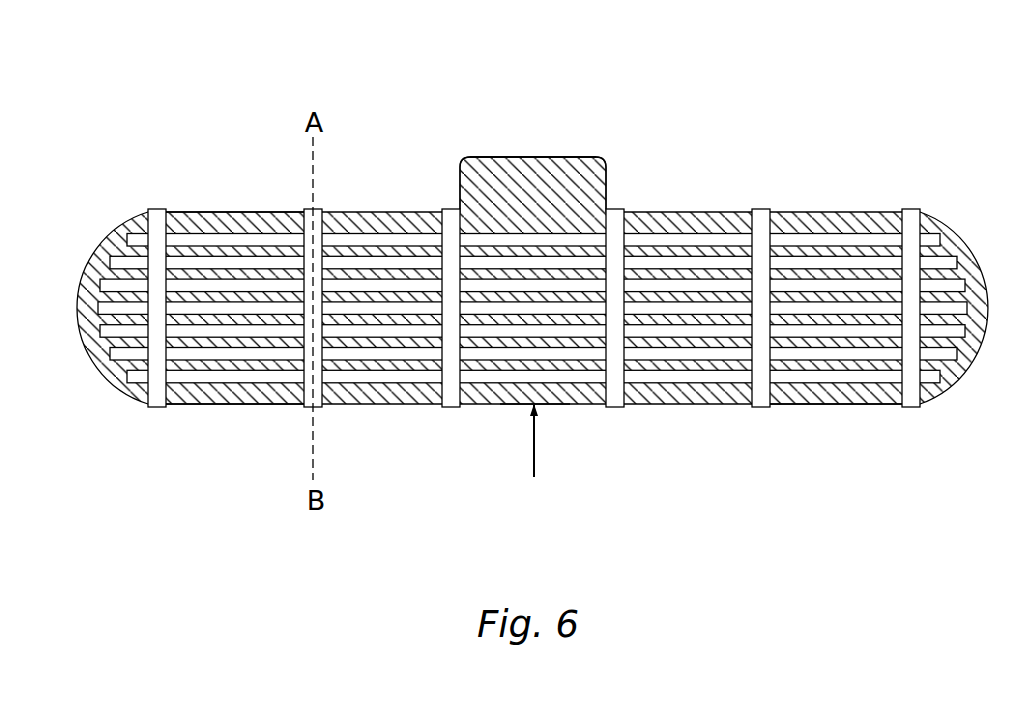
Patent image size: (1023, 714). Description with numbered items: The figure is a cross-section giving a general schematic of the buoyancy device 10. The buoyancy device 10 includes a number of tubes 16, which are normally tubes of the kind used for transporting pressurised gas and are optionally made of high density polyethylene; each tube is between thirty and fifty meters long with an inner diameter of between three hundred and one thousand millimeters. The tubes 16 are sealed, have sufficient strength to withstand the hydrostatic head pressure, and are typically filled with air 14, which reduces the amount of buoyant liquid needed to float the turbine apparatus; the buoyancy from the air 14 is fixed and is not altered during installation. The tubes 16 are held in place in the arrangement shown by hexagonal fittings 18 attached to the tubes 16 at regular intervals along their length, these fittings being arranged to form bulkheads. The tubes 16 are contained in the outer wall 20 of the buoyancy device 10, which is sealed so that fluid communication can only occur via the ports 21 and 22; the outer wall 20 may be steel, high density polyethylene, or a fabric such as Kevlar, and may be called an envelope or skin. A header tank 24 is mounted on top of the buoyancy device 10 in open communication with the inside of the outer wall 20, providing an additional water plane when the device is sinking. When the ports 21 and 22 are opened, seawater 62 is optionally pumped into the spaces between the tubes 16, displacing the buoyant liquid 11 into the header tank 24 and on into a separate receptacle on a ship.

The buoyancy device 10 is at (835, 140).
The buoyant liquid 11 is at (534, 157).
The air 14 is at (855, 235).
The tubes 16 is at (219, 231).
The hexagonal fittings 18 is at (762, 392).
The outer wall 20 is at (838, 399).
The port 21 is at (528, 405).
The port 22 is at (534, 157).
The header tank 24 is at (583, 196).
The seawater 62 is at (534, 459).